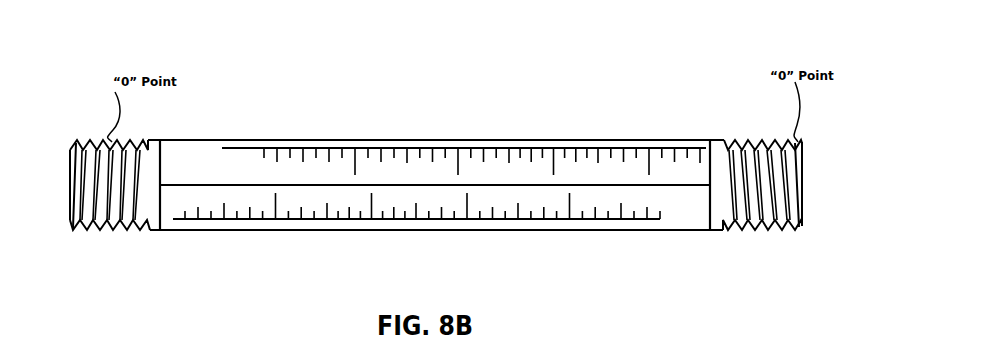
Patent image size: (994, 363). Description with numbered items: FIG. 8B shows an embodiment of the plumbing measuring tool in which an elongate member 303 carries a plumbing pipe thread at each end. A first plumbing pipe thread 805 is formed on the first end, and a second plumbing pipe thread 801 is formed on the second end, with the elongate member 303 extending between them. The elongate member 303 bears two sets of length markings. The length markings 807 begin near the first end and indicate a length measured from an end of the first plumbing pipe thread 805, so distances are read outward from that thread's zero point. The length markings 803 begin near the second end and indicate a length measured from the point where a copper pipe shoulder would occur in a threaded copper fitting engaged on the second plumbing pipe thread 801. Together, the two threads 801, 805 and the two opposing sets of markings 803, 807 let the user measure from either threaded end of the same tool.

The second plumbing pipe thread 801 is at (96, 233).
The length markings 803 is at (250, 221).
The elongate member 303 is at (475, 225).
The first plumbing pipe thread 805 is at (763, 232).
The length markings 807 is at (552, 149).